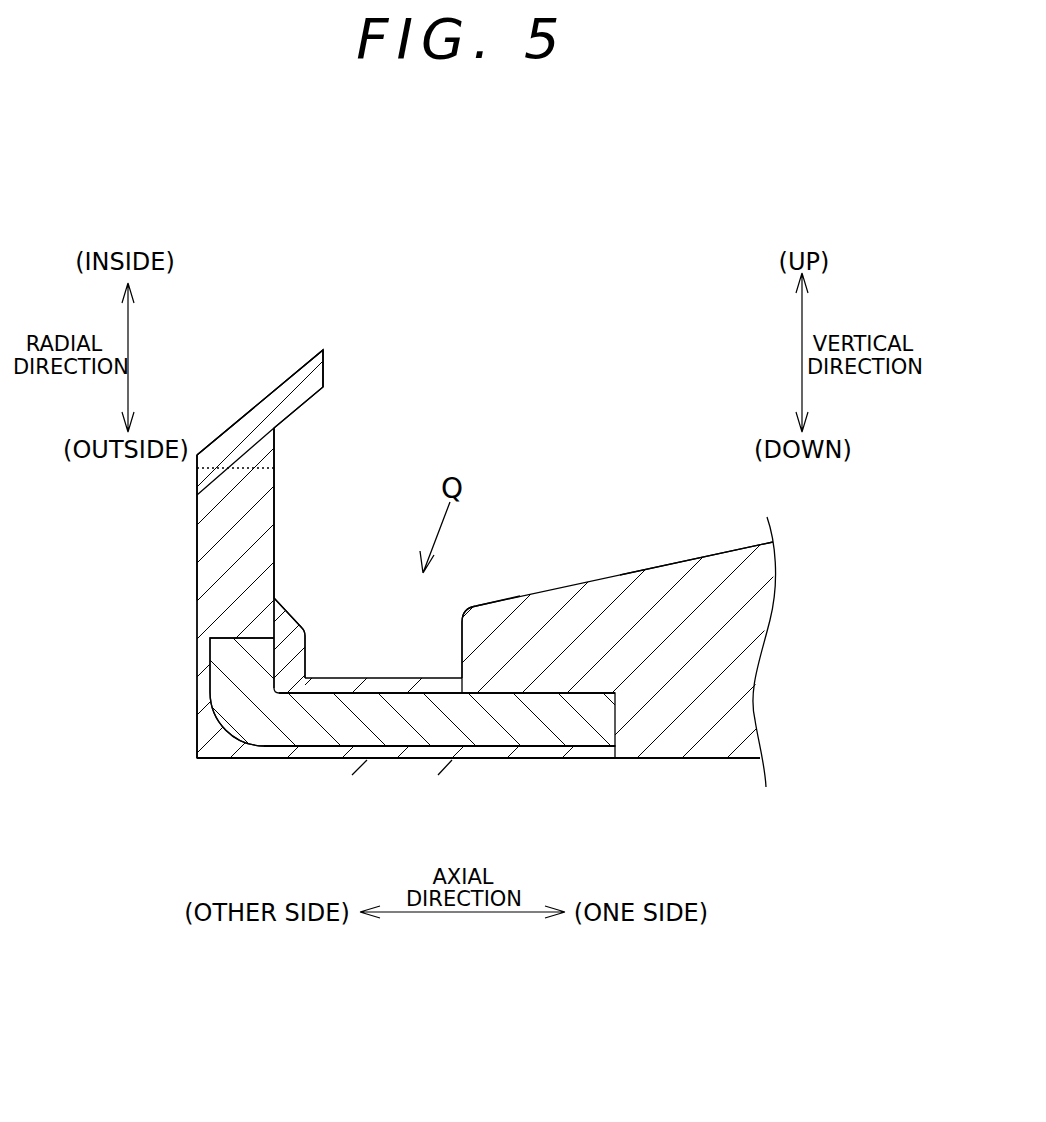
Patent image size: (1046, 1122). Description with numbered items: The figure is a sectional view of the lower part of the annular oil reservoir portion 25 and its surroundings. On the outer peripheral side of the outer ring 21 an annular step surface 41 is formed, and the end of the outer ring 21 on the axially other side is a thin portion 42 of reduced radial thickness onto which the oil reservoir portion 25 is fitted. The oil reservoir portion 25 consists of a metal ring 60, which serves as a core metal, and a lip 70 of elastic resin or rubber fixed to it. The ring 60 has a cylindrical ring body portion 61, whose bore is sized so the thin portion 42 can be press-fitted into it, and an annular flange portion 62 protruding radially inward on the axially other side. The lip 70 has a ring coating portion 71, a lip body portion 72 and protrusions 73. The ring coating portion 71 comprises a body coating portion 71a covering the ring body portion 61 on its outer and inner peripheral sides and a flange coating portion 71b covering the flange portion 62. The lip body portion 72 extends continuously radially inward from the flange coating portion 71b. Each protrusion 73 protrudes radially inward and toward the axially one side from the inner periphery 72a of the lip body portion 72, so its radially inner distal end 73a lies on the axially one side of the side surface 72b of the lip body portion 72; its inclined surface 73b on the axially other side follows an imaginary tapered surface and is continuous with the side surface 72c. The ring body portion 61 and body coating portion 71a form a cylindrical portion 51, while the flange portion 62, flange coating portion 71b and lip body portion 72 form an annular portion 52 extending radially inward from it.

The outer ring 21 is at (690, 600).
The oil reservoir portion 25 is at (197, 743).
The step surface 41 is at (566, 675).
The thin portion 42 is at (500, 662).
The cylindrical portion 51 is at (448, 762).
The annular portion 52 is at (197, 514).
The ring 60 is at (283, 718).
The ring body portion 61 is at (398, 718).
The flange portion 62 is at (232, 683).
The lip 70 is at (245, 760).
The ring coating portion 71 is at (360, 762).
The body coating portion 71a is at (383, 678).
The flange coating portion 71b is at (262, 627).
The lip body portion 72 is at (232, 572).
The inner periphery 72a is at (277, 430).
The side surface 72b is at (277, 494).
The side surface 72c is at (197, 623).
The protrusion 73 is at (219, 447).
The distal end 73a is at (323, 347).
The inclined surface 73b is at (246, 402).